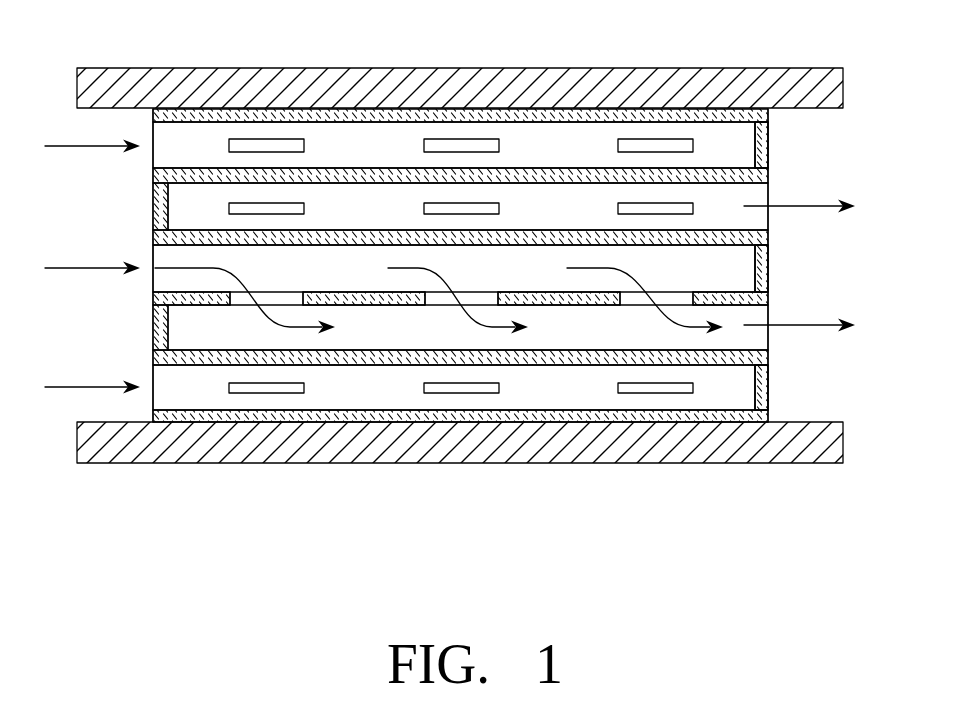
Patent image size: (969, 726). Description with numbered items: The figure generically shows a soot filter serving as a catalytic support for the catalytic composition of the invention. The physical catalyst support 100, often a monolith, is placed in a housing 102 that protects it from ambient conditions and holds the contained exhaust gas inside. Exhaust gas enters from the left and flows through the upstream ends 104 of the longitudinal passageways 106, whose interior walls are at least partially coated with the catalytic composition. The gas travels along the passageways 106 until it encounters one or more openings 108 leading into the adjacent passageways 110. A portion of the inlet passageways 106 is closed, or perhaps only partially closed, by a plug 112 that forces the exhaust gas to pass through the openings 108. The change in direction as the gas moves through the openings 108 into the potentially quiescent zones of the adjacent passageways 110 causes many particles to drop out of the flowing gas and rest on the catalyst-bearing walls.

The physical catalyst support 100 is at (843, 170).
The housing 102 is at (553, 68).
The upstream ends 104 is at (160, 158).
The passageways 106 is at (367, 158).
The openings 108 is at (245, 298).
The adjacent passageways 110 is at (415, 223).
The plug 112 is at (761, 142).